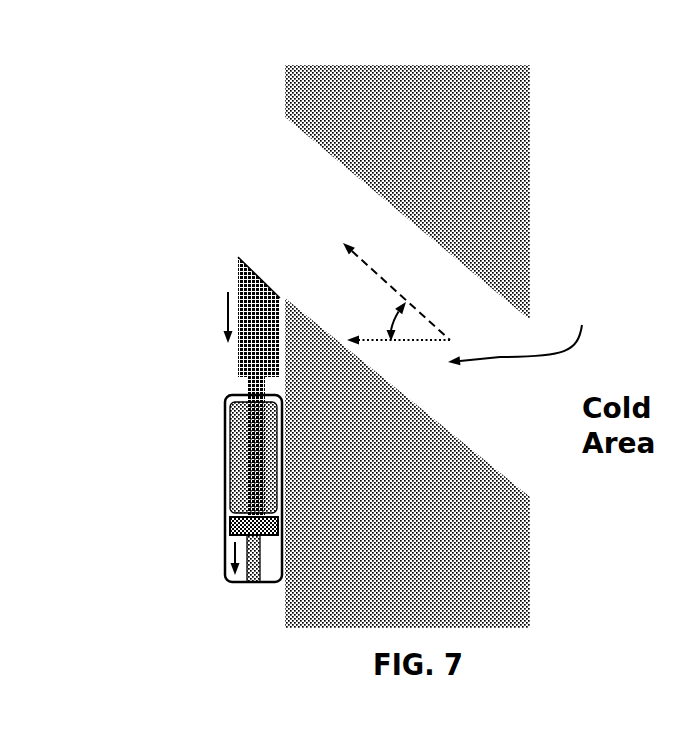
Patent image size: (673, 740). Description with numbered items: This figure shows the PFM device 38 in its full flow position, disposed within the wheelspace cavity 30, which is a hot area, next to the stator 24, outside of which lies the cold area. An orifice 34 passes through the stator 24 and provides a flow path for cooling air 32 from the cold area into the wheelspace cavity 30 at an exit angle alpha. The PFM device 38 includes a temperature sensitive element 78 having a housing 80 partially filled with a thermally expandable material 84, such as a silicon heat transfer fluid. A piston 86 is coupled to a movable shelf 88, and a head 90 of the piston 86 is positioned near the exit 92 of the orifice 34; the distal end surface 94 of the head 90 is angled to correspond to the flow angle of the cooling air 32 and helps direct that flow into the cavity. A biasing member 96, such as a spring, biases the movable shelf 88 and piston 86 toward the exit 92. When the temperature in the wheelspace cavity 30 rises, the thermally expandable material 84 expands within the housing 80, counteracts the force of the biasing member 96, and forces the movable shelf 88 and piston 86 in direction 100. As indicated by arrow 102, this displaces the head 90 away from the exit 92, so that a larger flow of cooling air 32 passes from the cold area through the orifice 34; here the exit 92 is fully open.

The stator 24 is at (529, 118).
The wheelspace cavity 30 is at (151, 104).
The cooling air 32 is at (392, 287).
The orifice 34 is at (523, 329).
The PFM device 38 is at (129, 286).
The temperature sensitive element 78 is at (196, 410).
The housing 80 is at (224, 493).
The thermally expandable material 84 is at (238, 430).
The piston 86 is at (247, 382).
The movable shelf 88 is at (229, 523).
The head 90 is at (238, 282).
The exit 92 is at (264, 158).
The distal end surface 94 is at (259, 277).
The biasing member 96 is at (250, 583).
The direction 100 is at (232, 551).
The arrow 102 is at (227, 323).